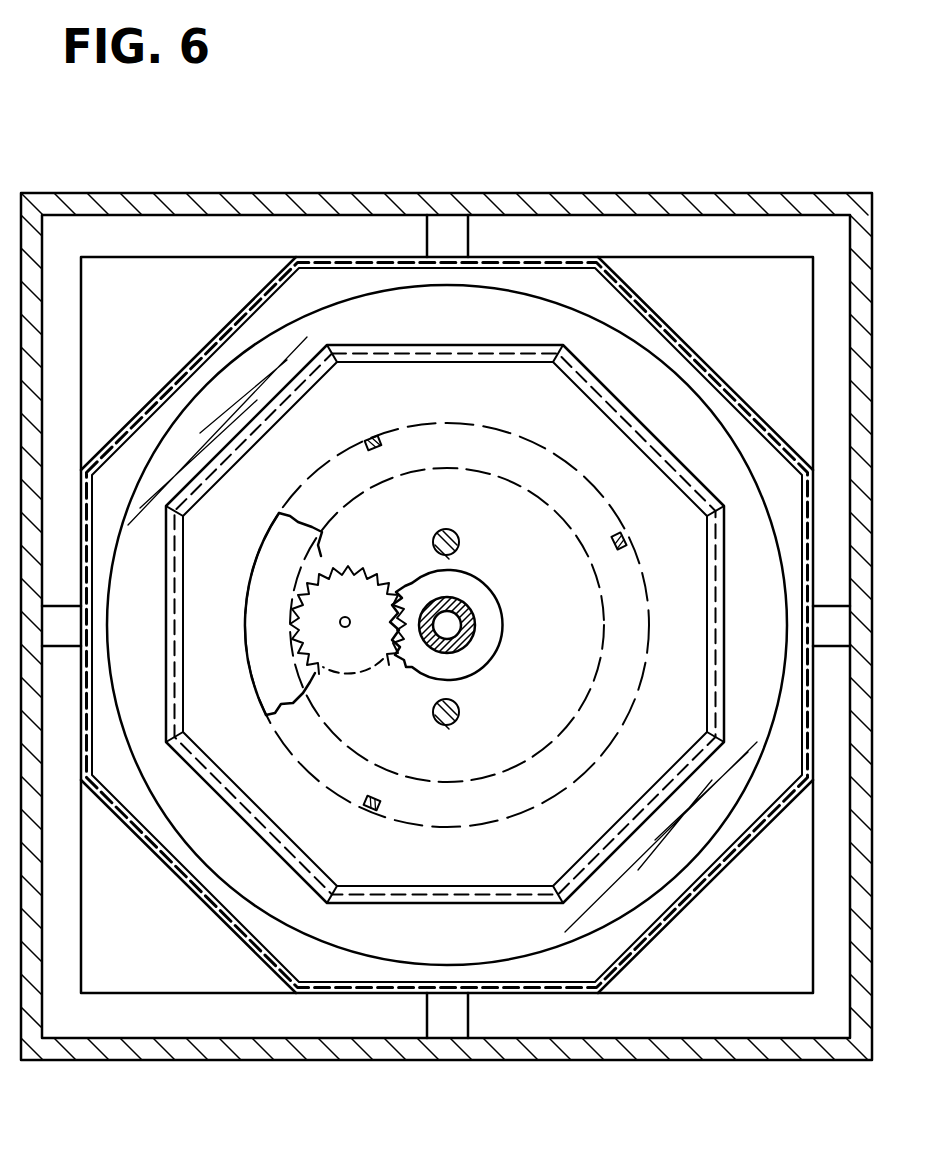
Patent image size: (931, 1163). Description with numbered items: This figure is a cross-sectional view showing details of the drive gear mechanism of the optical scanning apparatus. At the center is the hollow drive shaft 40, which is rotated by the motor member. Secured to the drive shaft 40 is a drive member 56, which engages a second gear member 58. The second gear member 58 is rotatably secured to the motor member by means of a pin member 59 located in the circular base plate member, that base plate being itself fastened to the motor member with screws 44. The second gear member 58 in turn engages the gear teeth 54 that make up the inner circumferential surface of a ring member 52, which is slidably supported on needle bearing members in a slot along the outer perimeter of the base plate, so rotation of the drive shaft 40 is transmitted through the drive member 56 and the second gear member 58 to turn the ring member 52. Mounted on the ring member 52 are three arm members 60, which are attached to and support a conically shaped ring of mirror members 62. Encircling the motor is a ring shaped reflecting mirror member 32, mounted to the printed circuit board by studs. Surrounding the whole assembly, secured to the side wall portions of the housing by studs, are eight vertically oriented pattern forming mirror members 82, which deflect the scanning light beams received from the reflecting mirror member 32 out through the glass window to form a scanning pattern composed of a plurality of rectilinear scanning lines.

The reflecting mirror member 32 is at (648, 376).
The drive shaft 40 is at (475, 618).
The screws 44 is at (452, 530).
The ring member 52 is at (268, 585).
The gear teeth 54 is at (312, 672).
The drive member 56 is at (465, 580).
The second gear member 58 is at (350, 572).
The pin member 59 is at (342, 627).
The arm members 60 is at (380, 436).
The mirror members 62 is at (412, 352).
The pattern forming mirror members 82 is at (203, 345).